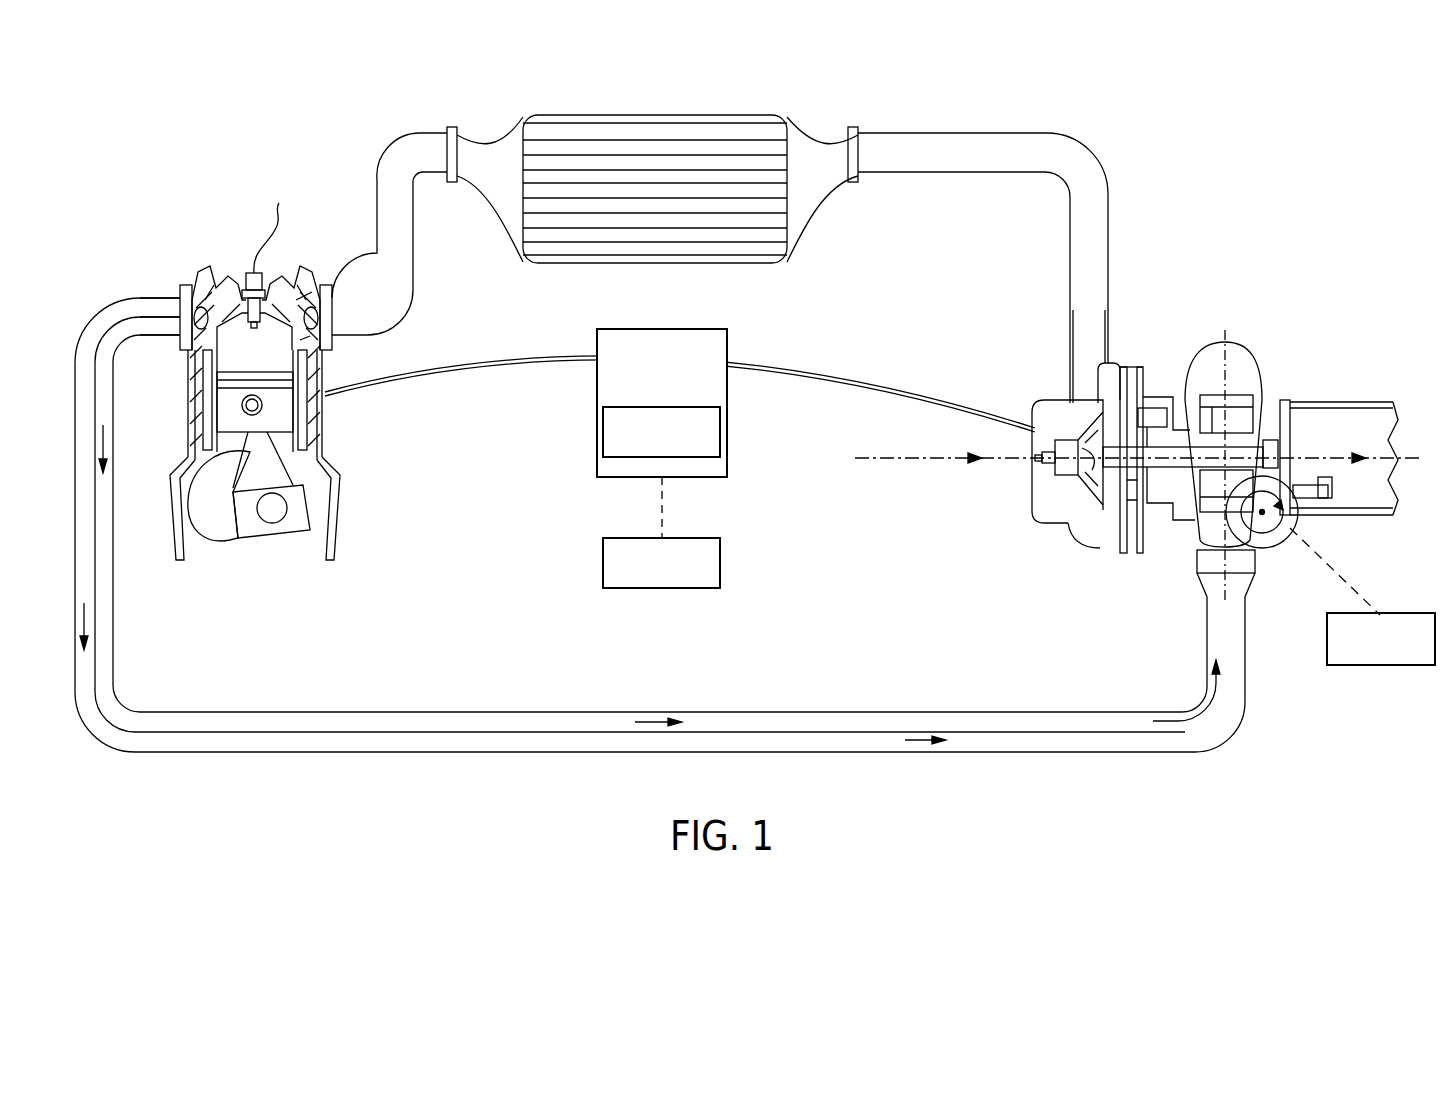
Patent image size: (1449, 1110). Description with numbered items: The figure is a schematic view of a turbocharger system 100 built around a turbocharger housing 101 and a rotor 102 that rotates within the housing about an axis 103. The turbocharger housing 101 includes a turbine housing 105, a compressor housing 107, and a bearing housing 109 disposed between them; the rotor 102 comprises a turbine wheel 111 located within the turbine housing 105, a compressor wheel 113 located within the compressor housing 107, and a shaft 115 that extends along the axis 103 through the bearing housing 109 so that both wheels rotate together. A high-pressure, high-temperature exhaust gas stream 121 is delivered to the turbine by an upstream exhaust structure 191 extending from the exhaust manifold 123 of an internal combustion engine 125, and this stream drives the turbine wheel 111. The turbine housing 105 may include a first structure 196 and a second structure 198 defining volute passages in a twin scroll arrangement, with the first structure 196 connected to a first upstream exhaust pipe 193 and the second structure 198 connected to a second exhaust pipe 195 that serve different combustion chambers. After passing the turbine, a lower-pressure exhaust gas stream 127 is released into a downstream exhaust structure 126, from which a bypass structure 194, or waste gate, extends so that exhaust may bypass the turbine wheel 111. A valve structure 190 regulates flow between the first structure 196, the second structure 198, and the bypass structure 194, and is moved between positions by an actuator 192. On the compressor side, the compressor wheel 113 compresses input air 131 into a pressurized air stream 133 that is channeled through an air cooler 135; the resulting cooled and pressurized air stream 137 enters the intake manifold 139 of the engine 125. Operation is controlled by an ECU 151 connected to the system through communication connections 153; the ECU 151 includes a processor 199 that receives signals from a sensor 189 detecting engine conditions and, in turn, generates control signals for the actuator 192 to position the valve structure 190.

The turbocharger system 100 is at (1139, 387).
The turbocharger housing 101 is at (1148, 360).
The rotor 102 is at (1130, 468).
The axis 103 is at (1407, 457).
The turbine housing 105 is at (1256, 423).
The compressor housing 107 is at (1042, 405).
The bearing housing 109 is at (1158, 408).
The turbine wheel 111 is at (1212, 440).
The compressor wheel 113 is at (1086, 490).
The shaft 115 is at (1163, 462).
The exhaust gas stream 121 is at (652, 720).
The exhaust manifold 123 is at (196, 292).
The internal combustion engine 125 is at (288, 420).
The downstream exhaust structure 126 is at (1346, 393).
The exhaust gas stream 127 is at (1327, 453).
The input air 131 is at (946, 462).
The pressurized air stream 133 is at (1088, 252).
The air cooler 135 is at (650, 140).
The cooled and pressurized air stream 137 is at (393, 248).
The intake manifold 139 is at (322, 332).
The ECU 151 is at (681, 382).
The communication connections 153 is at (805, 375).
The sensor 189 is at (720, 566).
The valve structure 190 is at (1275, 565).
The upstream exhaust structure 191 is at (514, 704).
The actuator 192 is at (1380, 665).
The first upstream exhaust pipe 193 is at (1064, 718).
The bypass structure 194 is at (1322, 503).
The second exhaust pipe 195 is at (1064, 745).
The first structure 196 is at (1216, 348).
The second structure 198 is at (1252, 360).
The processor 199 is at (603, 437).